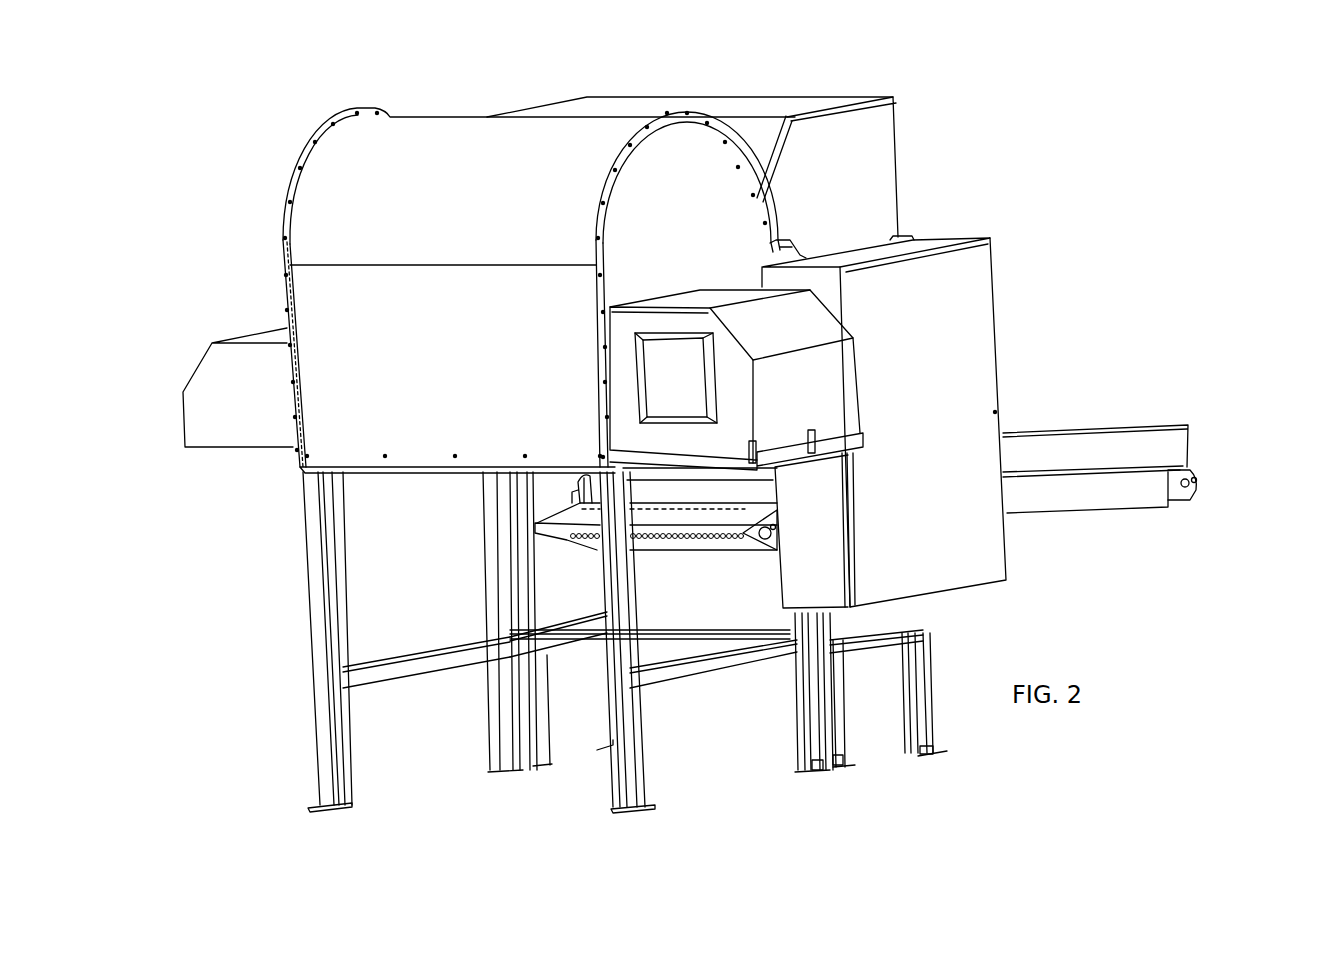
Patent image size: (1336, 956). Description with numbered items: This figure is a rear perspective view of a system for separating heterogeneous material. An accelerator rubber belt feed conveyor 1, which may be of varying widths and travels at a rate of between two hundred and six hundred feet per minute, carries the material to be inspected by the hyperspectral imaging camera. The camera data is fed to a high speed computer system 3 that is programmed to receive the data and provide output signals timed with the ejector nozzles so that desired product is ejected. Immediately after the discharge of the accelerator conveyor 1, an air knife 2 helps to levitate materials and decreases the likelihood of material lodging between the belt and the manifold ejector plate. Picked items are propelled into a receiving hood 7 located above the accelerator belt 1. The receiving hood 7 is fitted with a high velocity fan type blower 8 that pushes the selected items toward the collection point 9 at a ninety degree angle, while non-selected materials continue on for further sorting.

The accelerator conveyor 1 is at (1197, 497).
The air knife 2 is at (698, 568).
The computer system 3 is at (1003, 337).
The receiving hood 7 is at (293, 167).
The fan type blower 8 is at (770, 293).
The collection point 9 is at (237, 447).